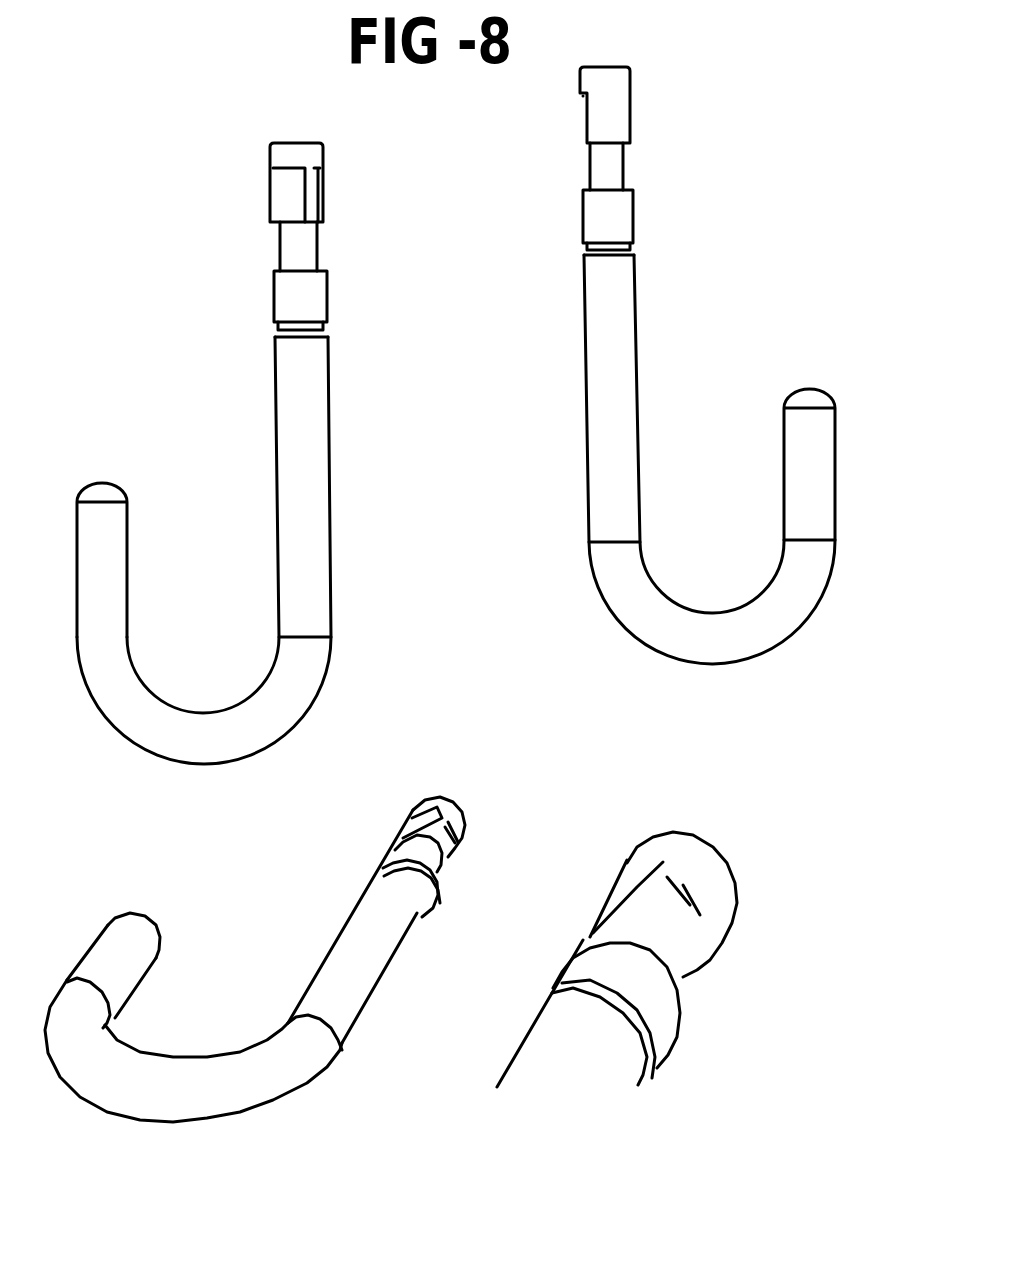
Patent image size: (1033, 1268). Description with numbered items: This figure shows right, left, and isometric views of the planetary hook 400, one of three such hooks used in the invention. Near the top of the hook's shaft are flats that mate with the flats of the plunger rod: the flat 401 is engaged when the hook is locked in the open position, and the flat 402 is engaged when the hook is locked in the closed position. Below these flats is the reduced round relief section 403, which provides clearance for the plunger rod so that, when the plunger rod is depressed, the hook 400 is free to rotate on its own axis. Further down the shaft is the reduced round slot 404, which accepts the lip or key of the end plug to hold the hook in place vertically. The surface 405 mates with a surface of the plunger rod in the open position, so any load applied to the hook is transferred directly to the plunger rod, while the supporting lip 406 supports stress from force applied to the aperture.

The planetary hook 400 is at (440, 594).
The flat 401 is at (335, 190).
The flat 402 is at (277, 193).
The relief section (reduced round) 403 is at (268, 248).
The slot (reduced round) 404 is at (262, 332).
The surface 405 is at (742, 907).
The supporting lip 406 is at (641, 840).